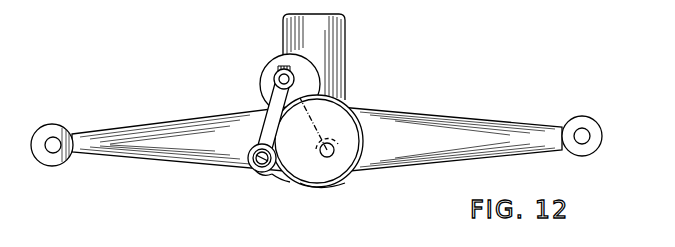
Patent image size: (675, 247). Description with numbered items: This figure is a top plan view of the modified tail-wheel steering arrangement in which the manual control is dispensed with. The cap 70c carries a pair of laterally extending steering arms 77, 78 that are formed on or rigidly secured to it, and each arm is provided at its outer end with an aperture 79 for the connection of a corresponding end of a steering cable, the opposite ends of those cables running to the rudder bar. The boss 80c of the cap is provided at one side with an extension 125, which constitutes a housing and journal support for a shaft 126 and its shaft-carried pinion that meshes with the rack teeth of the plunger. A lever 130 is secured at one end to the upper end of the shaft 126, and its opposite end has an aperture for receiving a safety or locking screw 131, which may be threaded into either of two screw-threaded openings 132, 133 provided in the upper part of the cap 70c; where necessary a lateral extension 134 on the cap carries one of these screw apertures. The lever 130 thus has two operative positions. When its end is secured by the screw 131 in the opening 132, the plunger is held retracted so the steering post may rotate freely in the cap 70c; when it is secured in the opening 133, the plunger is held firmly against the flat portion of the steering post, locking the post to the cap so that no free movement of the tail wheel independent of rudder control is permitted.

The cap 70c is at (343, 180).
The steering arm 77 is at (138, 145).
The steering arm 78 is at (487, 130).
The aperture 79 is at (52, 150).
The boss 80c is at (348, 26).
The extension 125 is at (272, 62).
The shaft 126 is at (280, 78).
The lever 130 is at (266, 114).
The safety or locking screw 131 is at (258, 164).
The screw threaded opening 132 is at (331, 147).
The screw threaded opening 133 is at (267, 174).
The lateral extension 134 is at (278, 177).